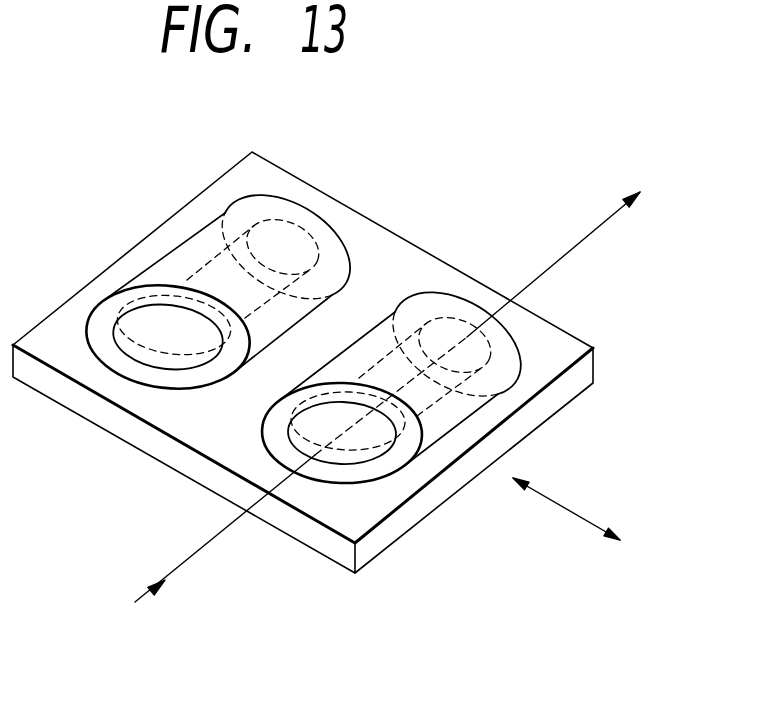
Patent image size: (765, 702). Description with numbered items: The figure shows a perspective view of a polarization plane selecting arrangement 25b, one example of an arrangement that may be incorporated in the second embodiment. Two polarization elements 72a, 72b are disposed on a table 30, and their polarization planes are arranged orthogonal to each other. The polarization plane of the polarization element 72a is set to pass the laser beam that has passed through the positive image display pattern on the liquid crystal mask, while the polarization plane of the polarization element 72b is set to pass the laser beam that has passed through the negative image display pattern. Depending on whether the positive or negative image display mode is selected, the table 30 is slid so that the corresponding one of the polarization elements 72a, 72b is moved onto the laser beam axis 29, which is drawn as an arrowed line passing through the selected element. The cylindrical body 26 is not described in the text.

The polarization plane selecting arrangement 25b is at (330, 163).
The cylindrical portion 26 is at (519, 343).
The laser beam axis 29 is at (582, 238).
The table 30 is at (578, 397).
The polarization element 72a is at (326, 466).
The polarization element 72b is at (160, 368).